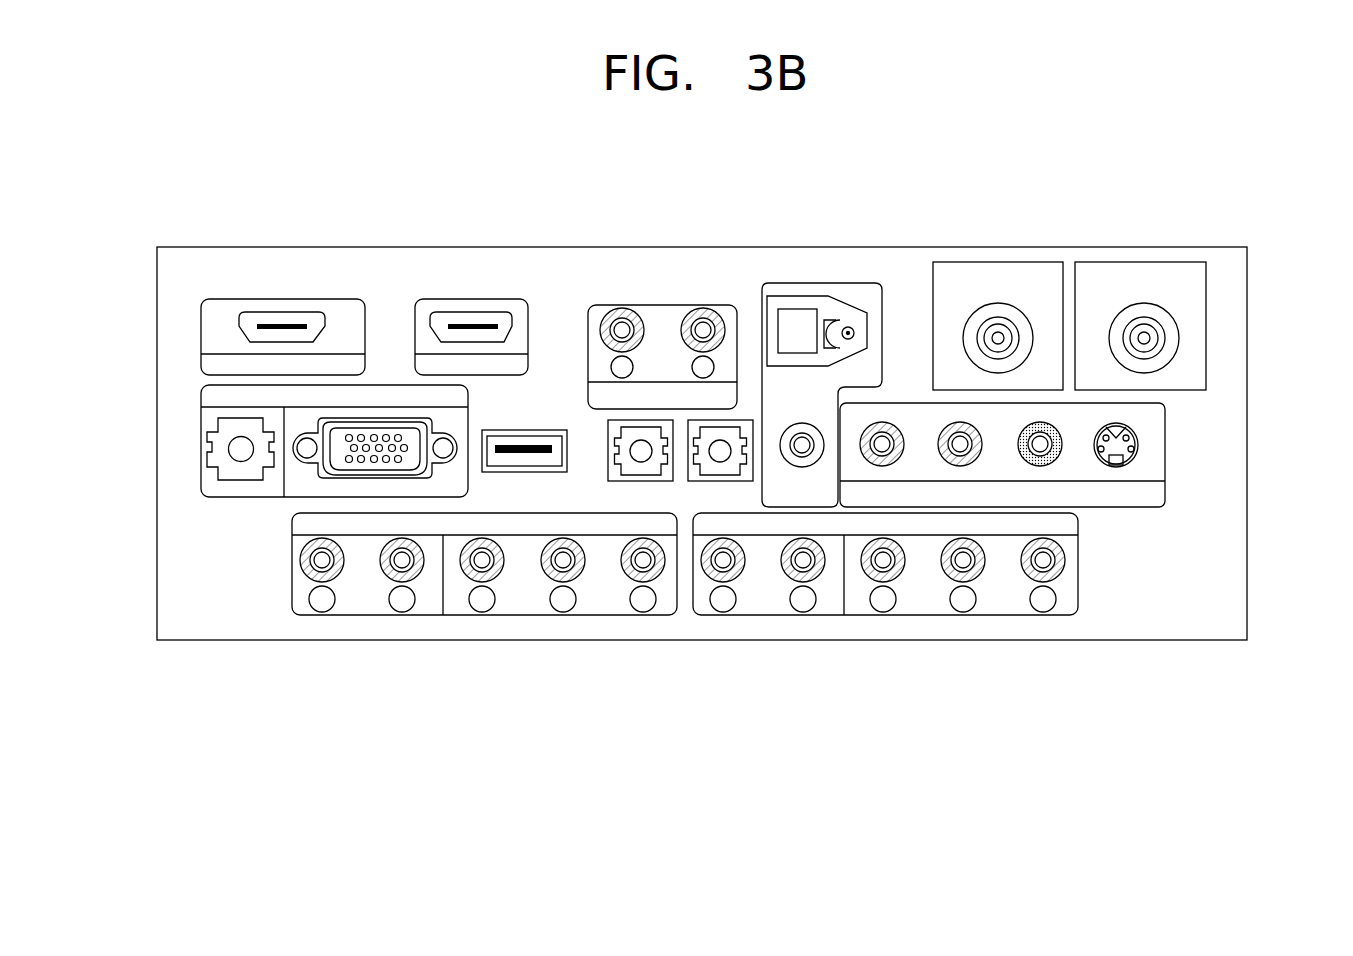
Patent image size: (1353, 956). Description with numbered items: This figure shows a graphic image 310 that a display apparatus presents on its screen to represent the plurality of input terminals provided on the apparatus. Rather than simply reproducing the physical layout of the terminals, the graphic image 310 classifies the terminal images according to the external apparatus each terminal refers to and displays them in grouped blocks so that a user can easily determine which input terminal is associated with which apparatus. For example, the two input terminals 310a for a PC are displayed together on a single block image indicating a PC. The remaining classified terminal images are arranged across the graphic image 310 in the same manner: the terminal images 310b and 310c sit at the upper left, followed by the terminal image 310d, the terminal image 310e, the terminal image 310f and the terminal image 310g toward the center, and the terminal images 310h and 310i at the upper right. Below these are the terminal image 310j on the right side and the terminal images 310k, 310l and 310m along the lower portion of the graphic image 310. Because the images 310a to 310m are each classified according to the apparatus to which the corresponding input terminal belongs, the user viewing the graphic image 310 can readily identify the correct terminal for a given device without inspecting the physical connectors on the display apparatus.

The graphic image 310 is at (1247, 565).
The input terminal image for a PC 310a is at (200, 450).
The input terminal image 310b is at (283, 298).
The input terminal image 310c is at (478, 298).
The input terminal image 310d is at (545, 430).
The input terminal image 310e is at (660, 305).
The input terminal image 310f is at (743, 420).
The input terminal image 310g is at (838, 283).
The input terminal image 310h is at (1000, 262).
The input terminal image 310i is at (1142, 262).
The input terminal image 310j is at (1165, 448).
The input terminal image 310k is at (883, 615).
The input terminal image 310l is at (676, 483).
The input terminal image 310m is at (493, 615).